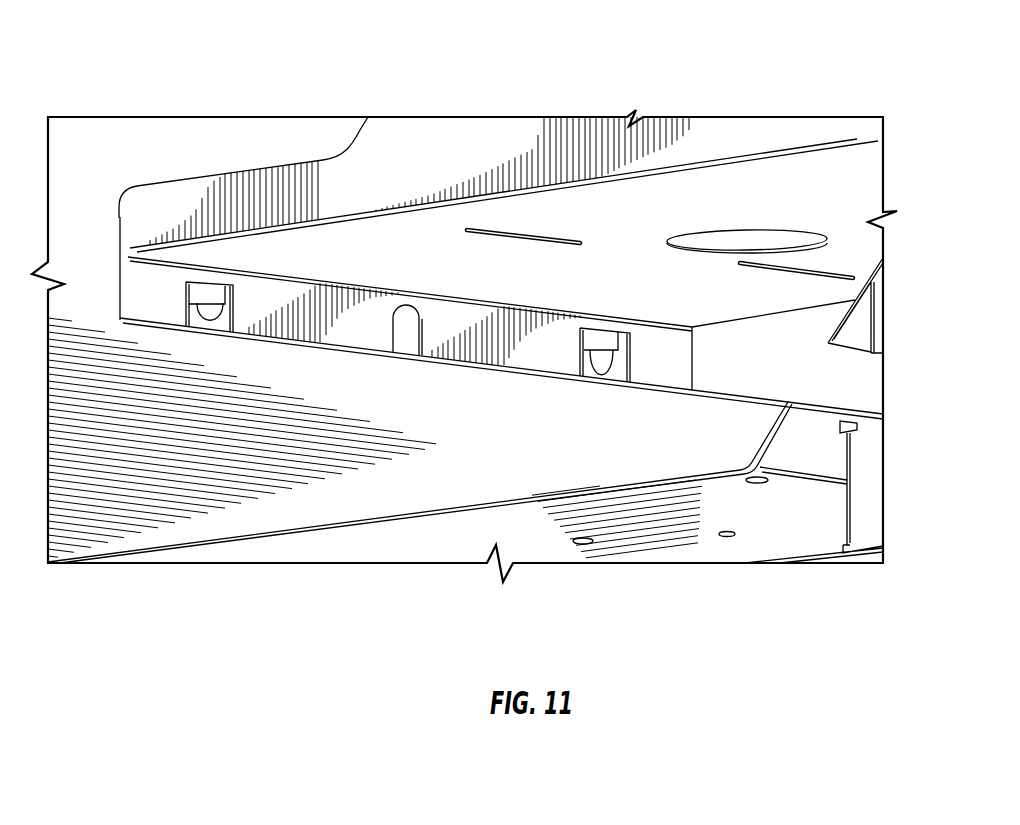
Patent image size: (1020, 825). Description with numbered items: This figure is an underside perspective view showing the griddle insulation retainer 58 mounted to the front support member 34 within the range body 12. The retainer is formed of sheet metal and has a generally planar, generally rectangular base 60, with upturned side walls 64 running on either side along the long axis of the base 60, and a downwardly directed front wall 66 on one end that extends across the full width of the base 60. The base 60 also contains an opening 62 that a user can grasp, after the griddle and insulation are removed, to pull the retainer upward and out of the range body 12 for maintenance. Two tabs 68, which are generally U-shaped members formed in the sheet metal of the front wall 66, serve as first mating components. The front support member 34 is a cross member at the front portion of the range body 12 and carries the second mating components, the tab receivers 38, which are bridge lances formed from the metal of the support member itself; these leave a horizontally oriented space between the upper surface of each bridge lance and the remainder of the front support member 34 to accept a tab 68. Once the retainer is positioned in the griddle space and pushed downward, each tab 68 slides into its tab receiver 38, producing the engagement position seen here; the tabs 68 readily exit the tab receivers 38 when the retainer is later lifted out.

The range body 12 is at (181, 527).
The front support member 34 is at (83, 183).
The tab receiver 38 is at (598, 337).
The griddle insulation retainer 58 is at (423, 270).
The base 60 is at (818, 188).
The opening 62 is at (706, 241).
The side wall 64 is at (460, 147).
The front wall 66 is at (658, 363).
The tab 68 is at (213, 318).